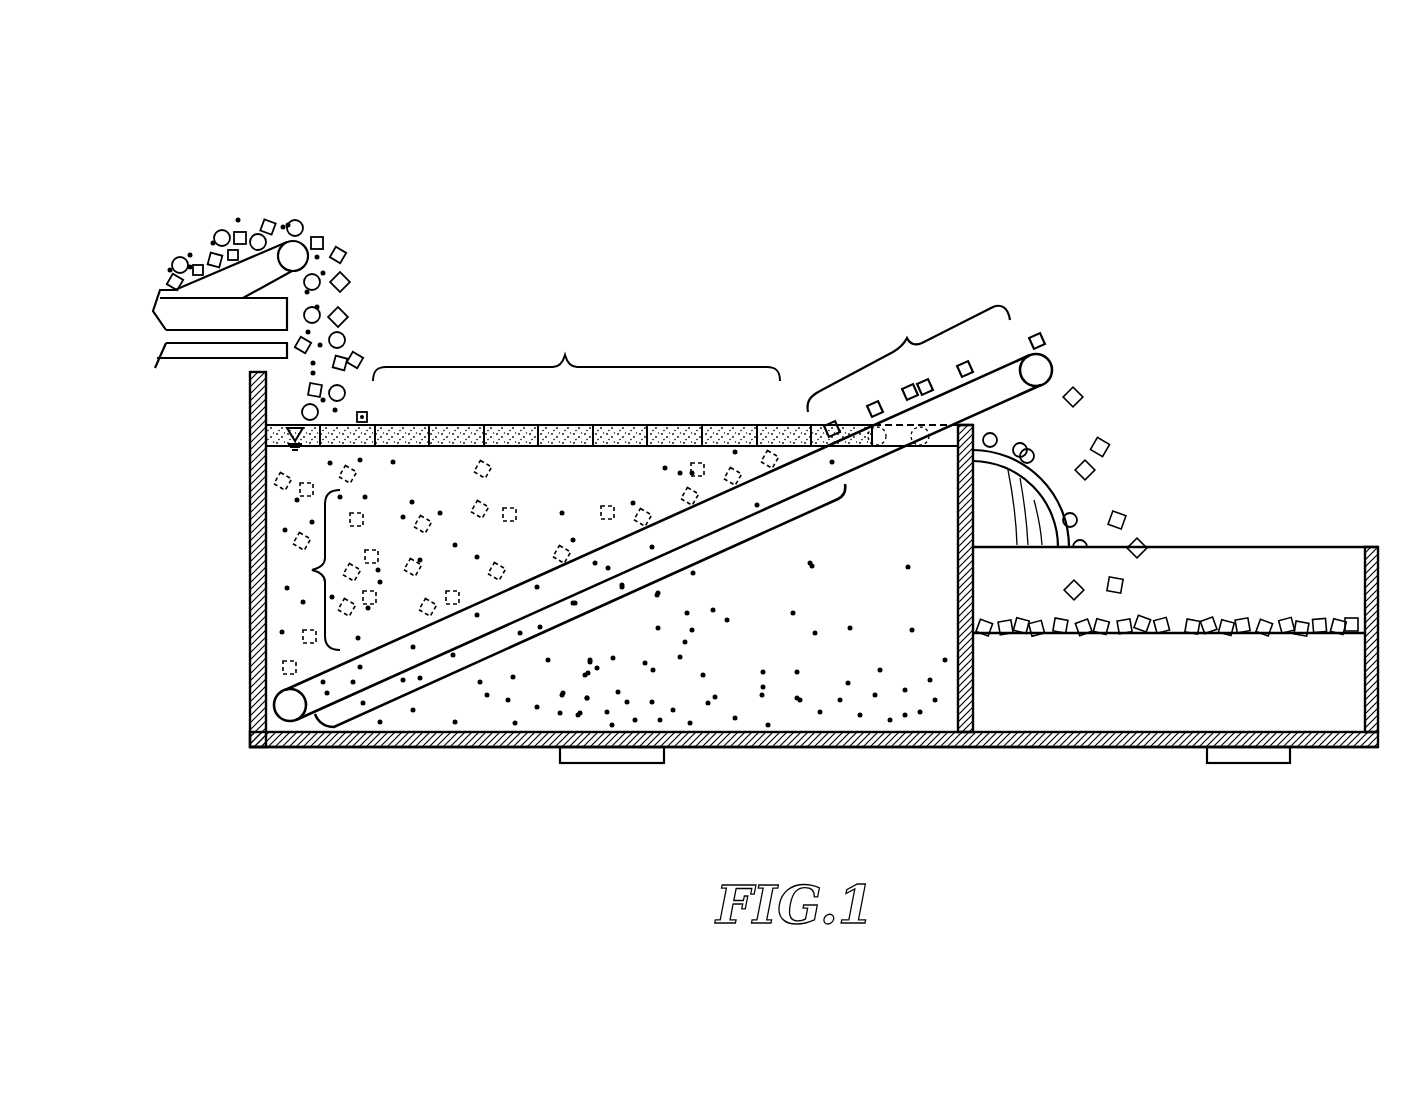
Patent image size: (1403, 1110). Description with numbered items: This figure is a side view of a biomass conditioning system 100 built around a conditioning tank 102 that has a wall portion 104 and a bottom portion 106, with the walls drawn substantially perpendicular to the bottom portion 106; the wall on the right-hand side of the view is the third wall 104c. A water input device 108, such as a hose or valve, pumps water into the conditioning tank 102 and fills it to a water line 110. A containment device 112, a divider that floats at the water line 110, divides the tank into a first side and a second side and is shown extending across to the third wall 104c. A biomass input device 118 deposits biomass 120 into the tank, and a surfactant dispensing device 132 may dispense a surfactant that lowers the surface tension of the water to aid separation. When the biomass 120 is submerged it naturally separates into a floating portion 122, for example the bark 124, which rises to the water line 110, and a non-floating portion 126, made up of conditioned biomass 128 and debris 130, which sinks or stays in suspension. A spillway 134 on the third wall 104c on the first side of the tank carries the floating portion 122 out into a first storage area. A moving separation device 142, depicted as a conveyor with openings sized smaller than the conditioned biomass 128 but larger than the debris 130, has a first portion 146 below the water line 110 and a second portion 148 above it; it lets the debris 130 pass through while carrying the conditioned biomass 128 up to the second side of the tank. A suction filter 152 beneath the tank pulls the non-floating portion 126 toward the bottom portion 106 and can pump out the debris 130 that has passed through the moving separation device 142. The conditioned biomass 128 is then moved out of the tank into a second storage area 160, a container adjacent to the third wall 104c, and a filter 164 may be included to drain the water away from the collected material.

The biomass conditioning system 100 is at (275, 174).
The conditioning tank 102 is at (964, 278).
The wall portion 104 is at (250, 547).
The third wall 104c is at (960, 470).
The bottom portion 106 is at (472, 748).
The water input device 108 is at (277, 310).
The water line 110 is at (272, 428).
The containment device 112 is at (617, 427).
The biomass input device 118 is at (297, 255).
The biomass 120 is at (316, 206).
The floating portion 122 is at (576, 354).
The bark 124 is at (508, 427).
The non-floating portion 126 is at (304, 570).
The conditioned biomass 128 is at (525, 509).
The debris 130 is at (694, 630).
The surfactant dispensing device 132 is at (280, 355).
The spillway 134 is at (1048, 496).
The moving separation device 142 is at (846, 458).
The first portion 146 is at (618, 597).
The second portion 148 is at (926, 371).
The suction filter 152 is at (635, 753).
The second storage area 160 is at (1282, 568).
The filter 164 is at (1262, 753).